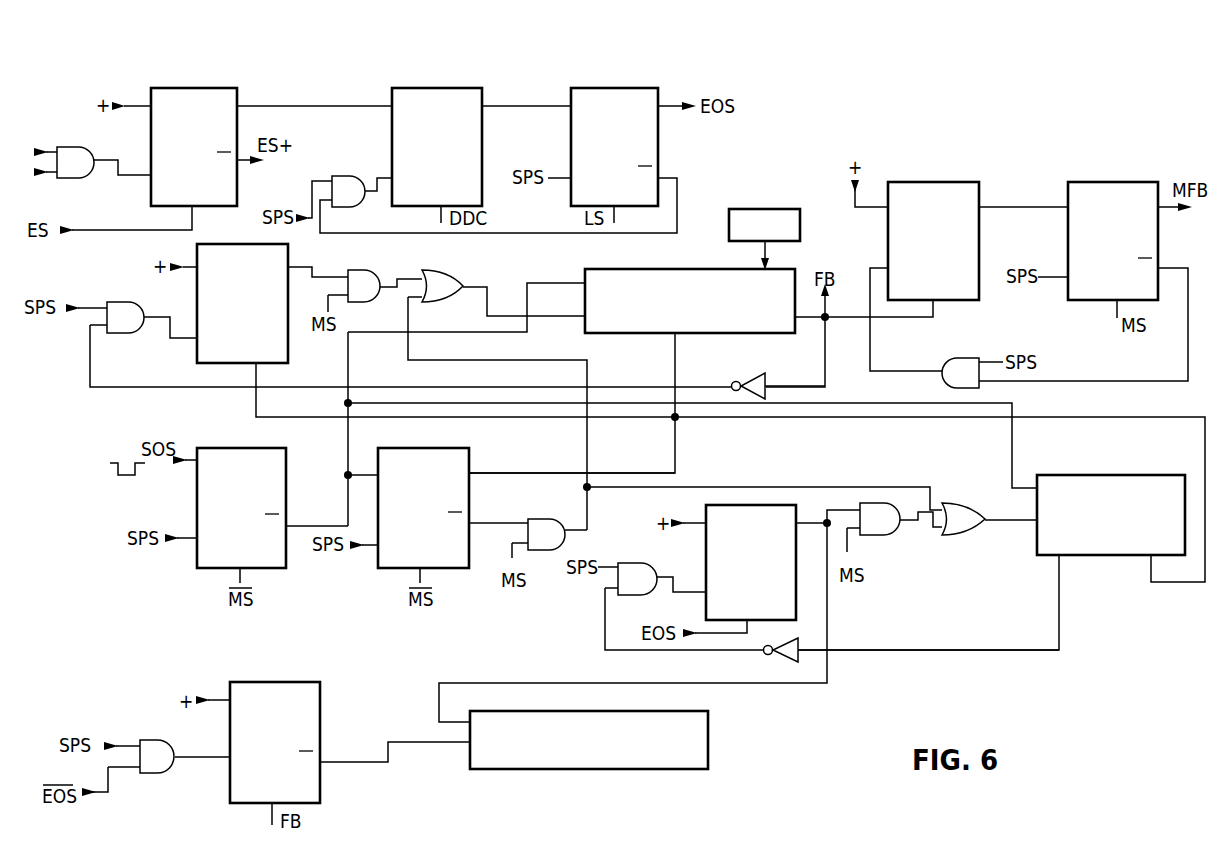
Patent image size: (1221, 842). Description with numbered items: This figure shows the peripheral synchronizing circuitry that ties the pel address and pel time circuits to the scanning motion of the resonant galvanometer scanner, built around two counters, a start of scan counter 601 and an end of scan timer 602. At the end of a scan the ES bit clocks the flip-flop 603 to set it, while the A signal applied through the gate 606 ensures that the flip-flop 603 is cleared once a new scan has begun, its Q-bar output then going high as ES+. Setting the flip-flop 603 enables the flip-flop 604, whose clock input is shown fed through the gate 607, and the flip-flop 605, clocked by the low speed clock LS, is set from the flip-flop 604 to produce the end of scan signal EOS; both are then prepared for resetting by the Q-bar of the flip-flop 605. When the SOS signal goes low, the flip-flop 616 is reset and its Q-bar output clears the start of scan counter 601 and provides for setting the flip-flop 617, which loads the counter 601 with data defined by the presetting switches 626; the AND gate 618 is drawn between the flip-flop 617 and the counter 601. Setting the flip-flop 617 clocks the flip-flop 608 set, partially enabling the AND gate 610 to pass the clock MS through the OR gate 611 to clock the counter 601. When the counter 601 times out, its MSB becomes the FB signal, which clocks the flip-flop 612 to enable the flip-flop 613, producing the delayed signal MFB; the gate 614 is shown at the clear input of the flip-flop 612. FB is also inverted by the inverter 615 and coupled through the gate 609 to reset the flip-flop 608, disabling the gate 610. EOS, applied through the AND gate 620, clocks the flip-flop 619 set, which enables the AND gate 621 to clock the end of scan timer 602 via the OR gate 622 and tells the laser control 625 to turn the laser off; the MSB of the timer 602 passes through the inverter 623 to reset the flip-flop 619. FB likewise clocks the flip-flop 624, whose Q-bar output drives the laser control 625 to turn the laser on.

The start of scan counter 601 is at (597, 269).
The end of scan timer 602 is at (1105, 475).
The flip-flop 603 is at (204, 88).
The flip-flop 604 is at (434, 88).
The flip-flop 605 is at (622, 88).
The gate 606 is at (88, 140).
The gate 607 is at (356, 162).
The flip-flop 608 is at (287, 245).
The gate 609 is at (135, 302).
The AND gate 610 is at (360, 270).
The OR gate 611 is at (460, 270).
The flip-flop 612 is at (934, 182).
The flip-flop 613 is at (1098, 182).
The gate 614 is at (955, 358).
The inverter 615 is at (760, 373).
The flip-flop 616 is at (224, 448).
The flip-flop 617 is at (470, 448).
The AND gate 618 is at (552, 519).
The flip-flop 619 is at (706, 559).
The AND gate 620 is at (644, 547).
The AND gate 621 is at (890, 536).
The OR gate 622 is at (970, 503).
The inverter 623 is at (776, 660).
The flip-flop 624 is at (265, 682).
The laser control 625 is at (710, 727).
The presetting switches 626 is at (771, 209).